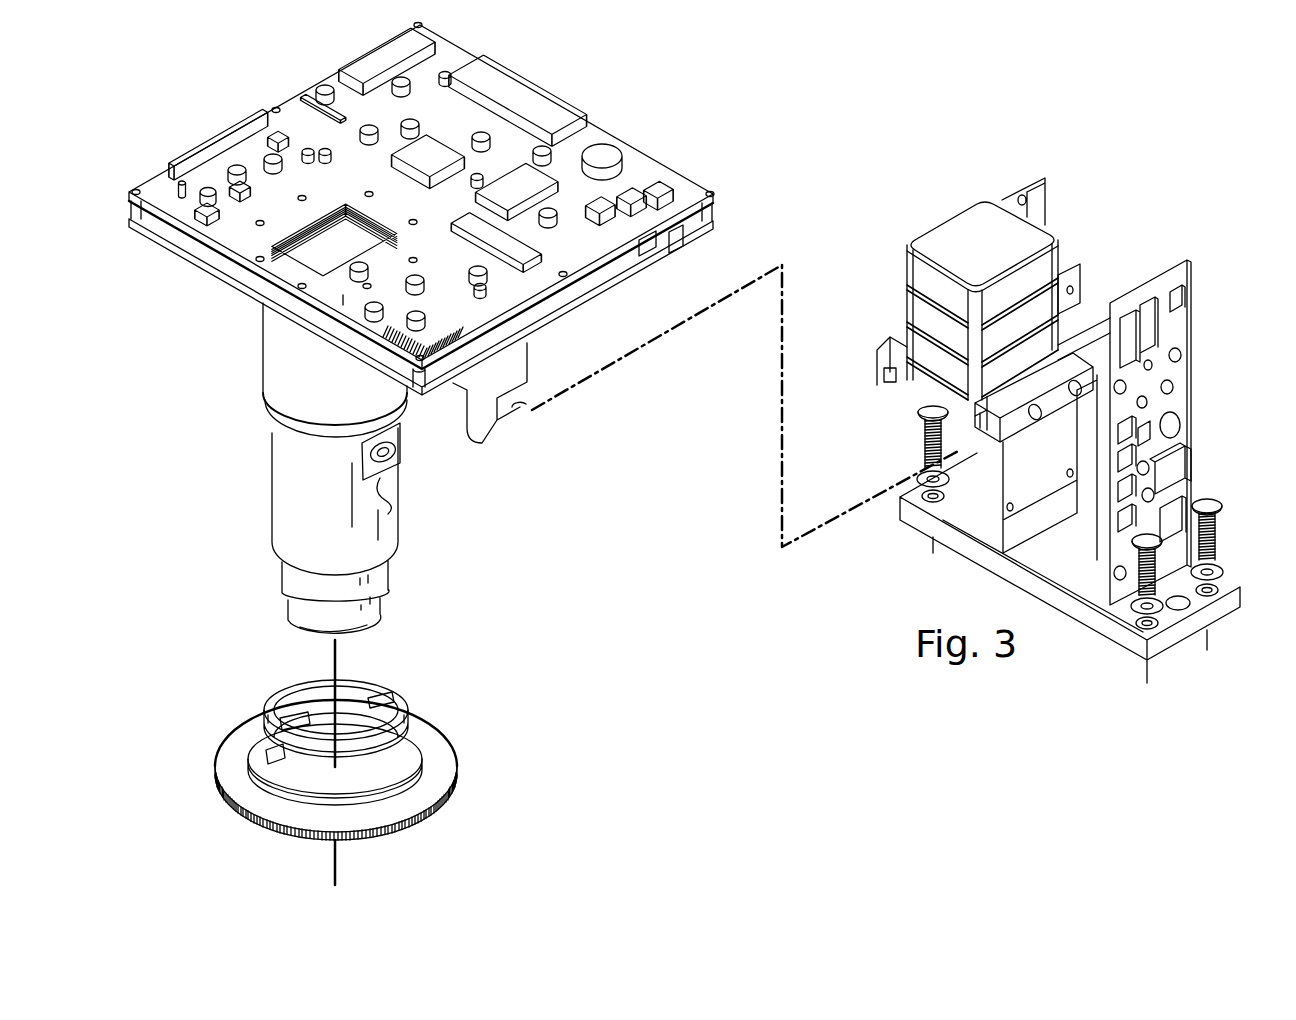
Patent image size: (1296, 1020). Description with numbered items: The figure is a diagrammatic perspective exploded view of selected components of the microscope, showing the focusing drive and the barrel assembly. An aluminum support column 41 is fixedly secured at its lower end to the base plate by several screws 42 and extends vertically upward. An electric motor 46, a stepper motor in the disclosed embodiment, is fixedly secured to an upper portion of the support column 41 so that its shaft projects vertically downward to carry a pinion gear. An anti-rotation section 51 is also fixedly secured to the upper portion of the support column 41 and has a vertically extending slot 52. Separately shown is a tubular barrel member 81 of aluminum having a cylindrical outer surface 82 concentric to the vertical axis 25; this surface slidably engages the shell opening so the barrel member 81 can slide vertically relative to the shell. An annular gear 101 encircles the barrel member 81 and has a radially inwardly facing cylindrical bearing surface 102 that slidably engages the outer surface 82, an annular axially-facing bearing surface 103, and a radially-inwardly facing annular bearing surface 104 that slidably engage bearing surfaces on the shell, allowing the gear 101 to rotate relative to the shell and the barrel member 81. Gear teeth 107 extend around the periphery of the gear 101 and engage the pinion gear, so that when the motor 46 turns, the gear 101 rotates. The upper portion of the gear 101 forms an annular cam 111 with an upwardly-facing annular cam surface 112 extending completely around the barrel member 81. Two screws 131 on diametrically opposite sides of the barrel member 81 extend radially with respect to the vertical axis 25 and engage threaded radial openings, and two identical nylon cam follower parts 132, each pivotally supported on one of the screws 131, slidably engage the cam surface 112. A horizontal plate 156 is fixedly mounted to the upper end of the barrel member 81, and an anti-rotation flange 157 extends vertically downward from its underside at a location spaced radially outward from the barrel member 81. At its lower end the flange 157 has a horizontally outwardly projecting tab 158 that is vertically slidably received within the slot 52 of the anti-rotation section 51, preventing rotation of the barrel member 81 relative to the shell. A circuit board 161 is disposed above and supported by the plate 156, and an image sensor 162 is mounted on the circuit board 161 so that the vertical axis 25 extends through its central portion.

The vertical axis 25 is at (332, 870).
The support column 41 is at (1032, 461).
The screws 42 is at (1218, 540).
The electric motor 46 is at (968, 256).
The anti-rotation section 51 is at (925, 412).
The vertical slot 52 is at (990, 445).
The tubular barrel member 81 is at (265, 407).
The cylindrical outer surface 82 is at (272, 497).
The annular gear 101 is at (232, 742).
The cylindrical bearing surface 102 is at (317, 698).
The annular axially-facing bearing surface 103 is at (292, 712).
The annular bearing surface 104 is at (377, 700).
The gear teeth 107 is at (215, 772).
The annular cam 111 is at (360, 695).
The annular cam surface 112 is at (410, 725).
The screws 131 is at (404, 455).
The cam follower parts 132 is at (397, 507).
The plate 156 is at (160, 254).
The anti-rotation flange 157 is at (526, 364).
The tab 158 is at (524, 407).
The circuit board 161 is at (316, 92).
The image sensor 162 is at (318, 237).